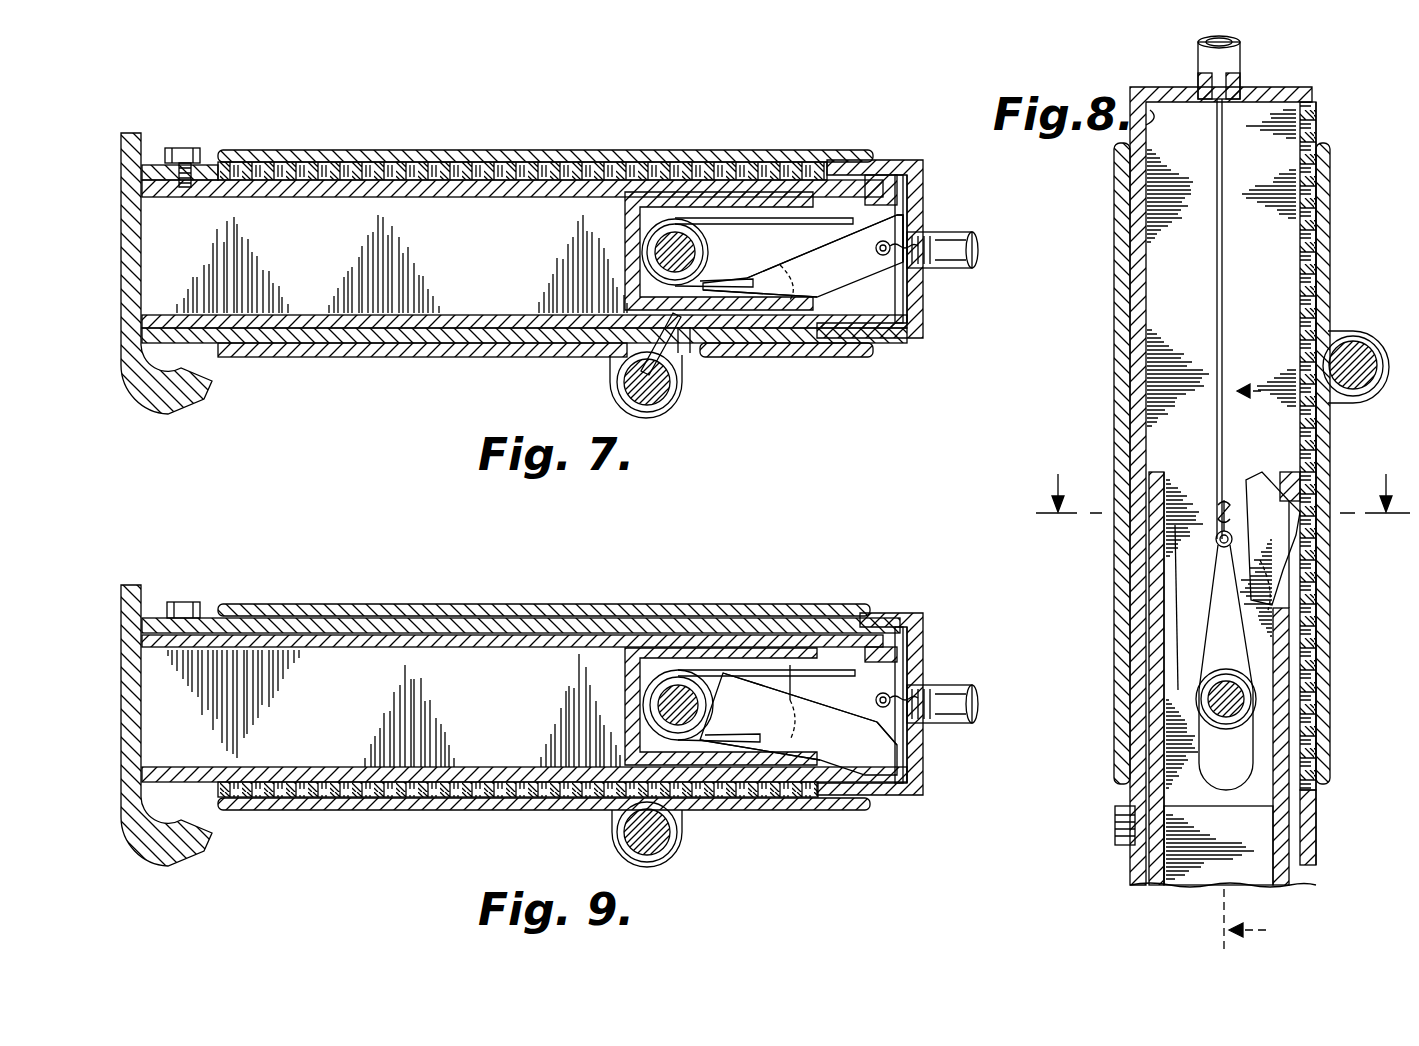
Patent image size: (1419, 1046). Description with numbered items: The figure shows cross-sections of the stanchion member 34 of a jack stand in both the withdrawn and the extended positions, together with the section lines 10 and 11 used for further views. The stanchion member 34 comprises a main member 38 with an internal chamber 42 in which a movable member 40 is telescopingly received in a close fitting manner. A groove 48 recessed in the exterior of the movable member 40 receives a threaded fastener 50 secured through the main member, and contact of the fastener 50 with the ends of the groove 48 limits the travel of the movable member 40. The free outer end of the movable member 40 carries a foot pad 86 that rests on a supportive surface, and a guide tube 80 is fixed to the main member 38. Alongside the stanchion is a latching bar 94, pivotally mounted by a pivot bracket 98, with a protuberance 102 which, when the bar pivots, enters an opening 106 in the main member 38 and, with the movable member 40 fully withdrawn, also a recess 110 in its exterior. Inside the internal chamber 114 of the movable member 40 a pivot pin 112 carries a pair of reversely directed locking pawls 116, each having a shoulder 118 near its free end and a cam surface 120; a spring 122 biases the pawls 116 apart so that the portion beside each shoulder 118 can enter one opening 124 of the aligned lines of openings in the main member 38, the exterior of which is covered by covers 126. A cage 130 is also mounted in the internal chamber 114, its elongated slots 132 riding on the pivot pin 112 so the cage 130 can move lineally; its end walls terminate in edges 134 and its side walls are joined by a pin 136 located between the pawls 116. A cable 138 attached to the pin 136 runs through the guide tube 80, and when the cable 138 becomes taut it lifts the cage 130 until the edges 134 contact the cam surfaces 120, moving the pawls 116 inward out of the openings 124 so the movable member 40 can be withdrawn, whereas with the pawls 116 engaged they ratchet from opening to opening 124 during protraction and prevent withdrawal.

In FIG. 8, the section line 10- 10 is at (1223, 477).
In FIG. 8, the section line 11- 11 is at (1264, 665).
In FIG. 7, the stanchion member 34 is at (905, 158).
In FIG. 9, the stanchion member 34 is at (912, 613).
In FIG. 8, the stanchion member 34 is at (1312, 94).
In FIG. 7, the main member 38 is at (912, 340).
In FIG. 9, the main member 38 is at (890, 620).
In FIG. 8, the main member 38 is at (1305, 132).
In FIG. 7, the movable member 40 is at (488, 322).
In FIG. 9, the movable member 40 is at (298, 782).
In FIG. 8, the movable member 40 is at (1215, 750).
In FIG. 7, the internal chamber 42 is at (880, 205).
In FIG. 9, the internal chamber 42 is at (880, 660).
In FIG. 8, the internal chamber 42 is at (1140, 125).
In FIG. 7, the groove 48 is at (368, 180).
In FIG. 7, the threaded fastener 50 is at (185, 148).
In FIG. 9, the threaded fastener 50 is at (188, 602).
In FIG. 8, the threaded fastener 50 is at (1115, 825).
In FIG. 7, the guide tube 80 is at (965, 246).
In FIG. 9, the guide tube 80 is at (968, 695).
In FIG. 8, the guide tube 80 is at (1200, 52).
In FIG. 7, the foot pad 86 is at (190, 410).
In FIG. 9, the foot pad 86 is at (141, 590).
In FIG. 7, the latching bar 94 is at (670, 400).
In FIG. 9, the latching bar 94 is at (640, 845).
In FIG. 8, the latching bar 94 is at (1360, 350).
In FIG. 7, the pivot bracket 98 is at (652, 412).
In FIG. 9, the pivot bracket 98 is at (672, 852).
In FIG. 8, the pivot bracket 98 is at (1375, 395).
In FIG. 7, the protuberance 102 is at (620, 365).
In FIG. 7, the opening 106 is at (700, 352).
In FIG. 7, the recess 110 is at (690, 372).
In FIG. 7, the pivot pin 112 is at (660, 228).
In FIG. 9, the pivot pin 112 is at (660, 680).
In FIG. 8, the pivot pin 112 is at (1210, 700).
In FIG. 7, the internal chamber 114 is at (403, 333).
In FIG. 9, the internal chamber 114 is at (445, 650).
In FIG. 8, the internal chamber 114 is at (1285, 830).
In FIG. 7, the locking pawl 116 is at (925, 330).
In FIG. 9, the locking pawl 116 is at (790, 665).
In FIG. 8, the locking pawl 116 is at (1155, 535).
In FIG. 7, the shoulder 118 is at (912, 190).
In FIG. 9, the shoulder 118 is at (892, 648).
In FIG. 8, the shoulder 118 is at (1310, 515).
In FIG. 7, the cam surface 120 is at (845, 165).
In FIG. 9, the cam surface 120 is at (825, 640).
In FIG. 8, the cam surface 120 is at (1272, 552).
In FIG. 7, the spring 122 is at (672, 240).
In FIG. 9, the spring 122 is at (728, 672).
In FIG. 8, the spring 122 is at (1190, 580).
In FIG. 7, the opening 124 is at (470, 165).
In FIG. 9, the opening 124 is at (380, 800).
In FIG. 8, the opening 124 is at (1120, 290).
In FIG. 7, the cover 126 is at (262, 150).
In FIG. 9, the cover 126 is at (270, 604).
In FIG. 8, the cover 126 is at (1118, 240).
In FIG. 7, the cage 130 is at (805, 345).
In FIG. 9, the cage 130 is at (620, 770).
In FIG. 8, the cage 130 is at (1295, 805).
In FIG. 7, the elongated slot 132 is at (650, 230).
In FIG. 9, the elongated slot 132 is at (650, 700).
In FIG. 8, the elongated slot 132 is at (1208, 782).
In FIG. 7, the edge 134 is at (815, 152).
In FIG. 9, the edge 134 is at (823, 665).
In FIG. 8, the edge 134 is at (1175, 605).
In FIG. 7, the pin 136 is at (935, 290).
In FIG. 9, the pin 136 is at (930, 735).
In FIG. 8, the pin 136 is at (1218, 545).
In FIG. 7, the cable 138 is at (945, 272).
In FIG. 9, the cable 138 is at (945, 720).
In FIG. 8, the cable 138 is at (1217, 190).